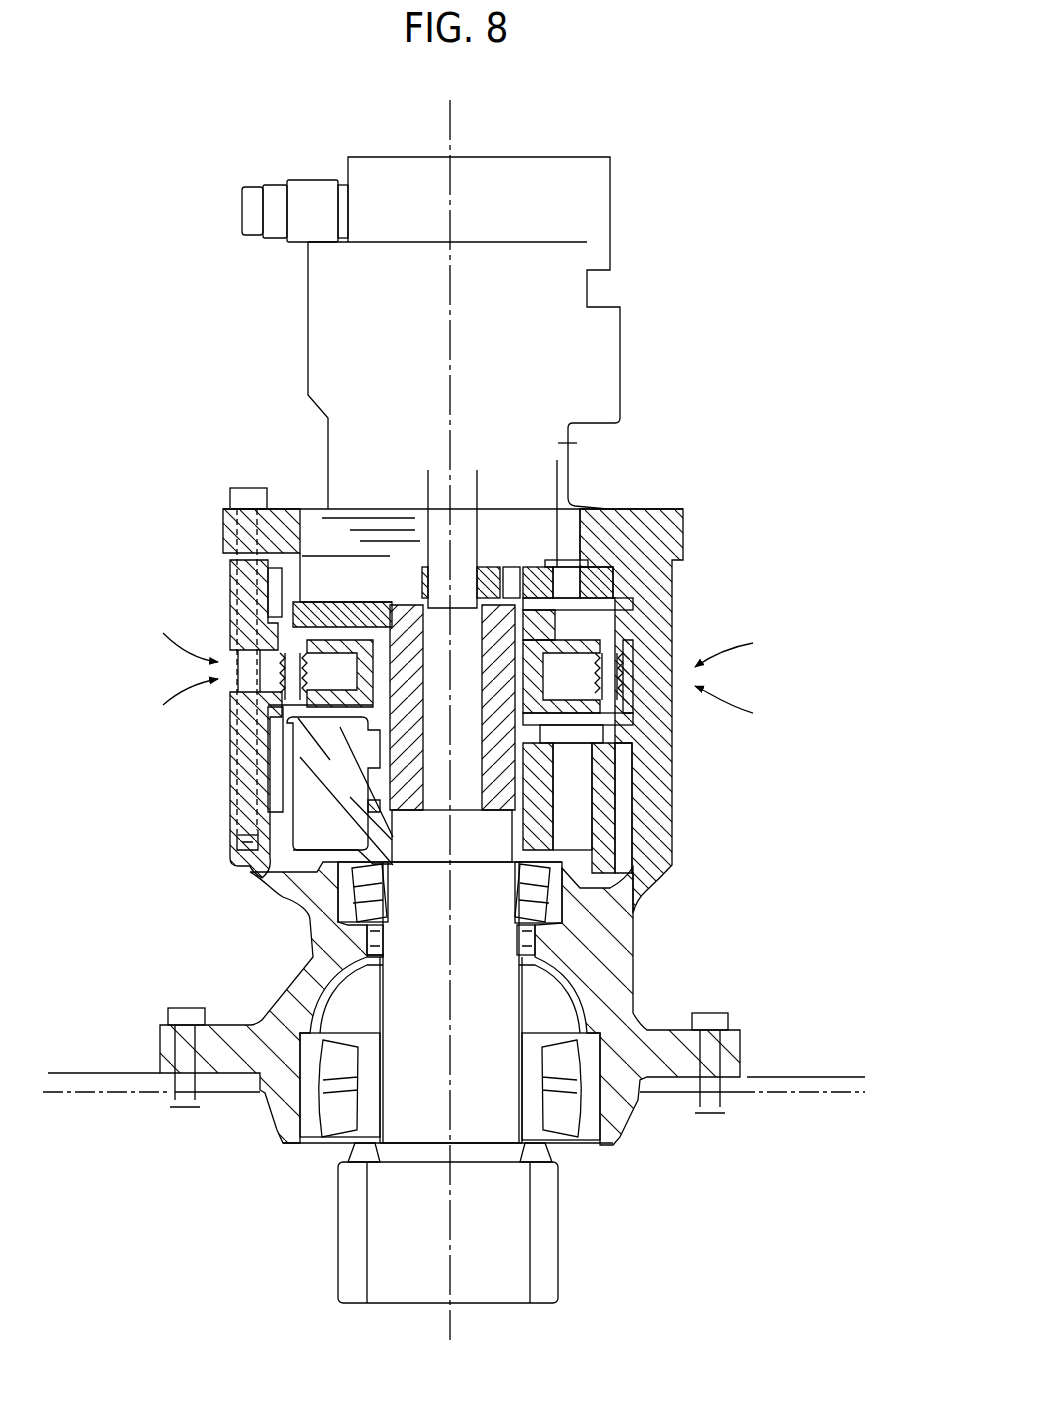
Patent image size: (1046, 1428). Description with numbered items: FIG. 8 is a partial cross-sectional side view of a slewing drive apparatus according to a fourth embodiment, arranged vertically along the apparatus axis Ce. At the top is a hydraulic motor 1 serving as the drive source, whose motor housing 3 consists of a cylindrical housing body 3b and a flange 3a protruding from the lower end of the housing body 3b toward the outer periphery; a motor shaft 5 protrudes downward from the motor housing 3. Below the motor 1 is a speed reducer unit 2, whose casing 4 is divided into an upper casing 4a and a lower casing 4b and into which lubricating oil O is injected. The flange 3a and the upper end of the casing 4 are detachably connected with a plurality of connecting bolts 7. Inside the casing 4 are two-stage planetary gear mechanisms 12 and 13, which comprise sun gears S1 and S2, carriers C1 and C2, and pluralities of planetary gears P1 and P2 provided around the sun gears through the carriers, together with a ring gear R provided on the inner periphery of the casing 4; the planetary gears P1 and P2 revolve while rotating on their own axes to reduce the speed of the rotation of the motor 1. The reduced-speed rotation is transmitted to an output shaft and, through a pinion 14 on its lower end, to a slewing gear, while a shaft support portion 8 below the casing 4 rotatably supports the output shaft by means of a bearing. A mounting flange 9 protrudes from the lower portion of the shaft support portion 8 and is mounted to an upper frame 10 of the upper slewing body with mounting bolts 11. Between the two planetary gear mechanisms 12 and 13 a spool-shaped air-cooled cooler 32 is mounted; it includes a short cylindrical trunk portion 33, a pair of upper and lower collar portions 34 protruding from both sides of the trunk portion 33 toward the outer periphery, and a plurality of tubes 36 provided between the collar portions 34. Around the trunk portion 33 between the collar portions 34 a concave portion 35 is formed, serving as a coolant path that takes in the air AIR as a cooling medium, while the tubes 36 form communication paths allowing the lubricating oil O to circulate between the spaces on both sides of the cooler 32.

The center axis Ce is at (452, 120).
The hydraulic motor 1 is at (300, 336).
The speed reducer unit 2 is at (210, 570).
The motor housing 3 is at (620, 378).
The flange 3a is at (653, 507).
The housing body 3b is at (558, 447).
The casing 4 is at (137, 572).
The upper casing 4a is at (230, 612).
The lower casing 4b is at (230, 760).
The motor shaft 5 is at (479, 487).
The connecting bolts 7 is at (248, 487).
The shaft support portion 8 is at (633, 933).
The mounting flange 9 is at (740, 1050).
The upper frame 10 is at (97, 1068).
The mounting bolts 11 is at (185, 1008).
The planetary gear mechanism 12 is at (700, 563).
The planetary gear mechanism 13 is at (700, 710).
The pinion 14 is at (560, 1245).
The air-cooled cooler 32 is at (641, 618).
The trunk portion 33 is at (332, 693).
The collar portions 34 is at (315, 627).
The concave portion 35 is at (540, 567).
The tubes 36 is at (230, 612).
The lubricating oil O is at (395, 494).
The carrier C1 is at (340, 603).
The carrier C2 is at (250, 872).
The sun gear S1 is at (390, 605).
The sun gear S2 is at (370, 788).
The planetary gears P1 is at (317, 475).
The planetary gears P2 is at (617, 807).
The ring gear R is at (237, 787).
The air flow AIR is at (749, 678).